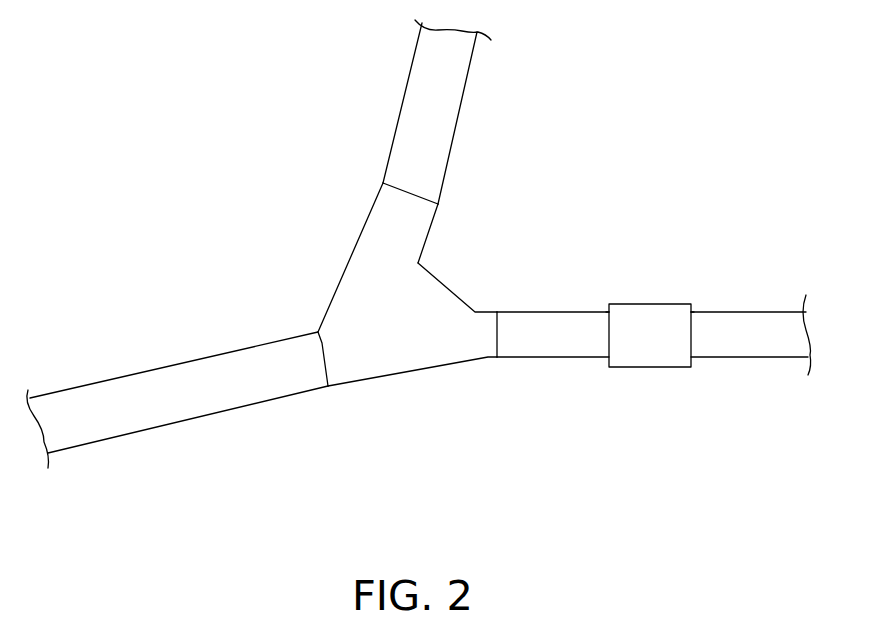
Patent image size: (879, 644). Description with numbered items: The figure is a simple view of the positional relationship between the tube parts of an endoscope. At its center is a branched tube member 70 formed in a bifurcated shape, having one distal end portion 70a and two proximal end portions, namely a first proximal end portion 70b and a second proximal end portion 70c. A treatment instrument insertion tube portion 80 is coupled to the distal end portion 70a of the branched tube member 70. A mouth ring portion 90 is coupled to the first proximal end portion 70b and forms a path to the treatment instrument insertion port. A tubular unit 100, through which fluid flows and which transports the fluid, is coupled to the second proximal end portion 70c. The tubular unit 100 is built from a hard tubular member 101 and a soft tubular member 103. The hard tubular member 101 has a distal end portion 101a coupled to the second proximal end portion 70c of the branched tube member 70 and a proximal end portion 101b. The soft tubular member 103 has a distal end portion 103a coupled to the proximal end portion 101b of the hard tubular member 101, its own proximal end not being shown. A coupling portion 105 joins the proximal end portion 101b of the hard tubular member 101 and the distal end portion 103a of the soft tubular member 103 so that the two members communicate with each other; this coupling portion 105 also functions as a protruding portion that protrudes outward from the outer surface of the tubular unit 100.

The branched tube member 70 is at (395, 340).
The distal end portion 70a is at (340, 366).
The first proximal end portion 70b is at (380, 218).
The second proximal end portion 70c is at (487, 323).
The treatment instrument insertion tube portion 80 is at (182, 410).
The mouth ring portion 90 is at (412, 102).
The tubular unit 100 is at (651, 367).
The hard tubular member 101 is at (559, 343).
The distal end portion 101a is at (511, 332).
The proximal end portion 101b is at (600, 330).
The soft tubular member 103 is at (746, 343).
The distal end portion 103a is at (702, 332).
The coupling portion 105 is at (649, 347).